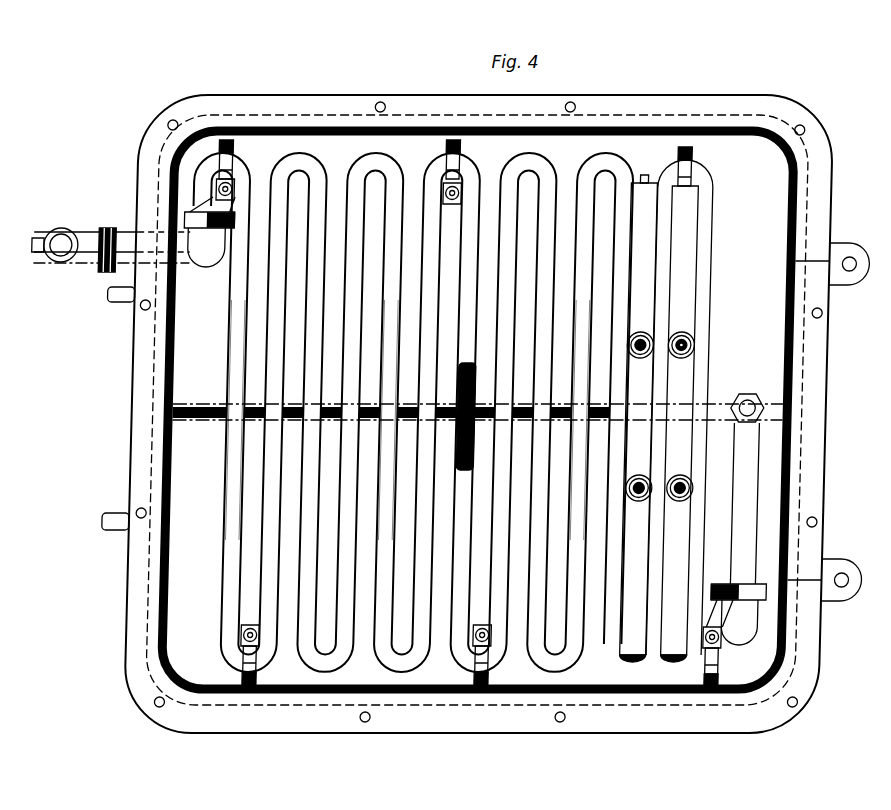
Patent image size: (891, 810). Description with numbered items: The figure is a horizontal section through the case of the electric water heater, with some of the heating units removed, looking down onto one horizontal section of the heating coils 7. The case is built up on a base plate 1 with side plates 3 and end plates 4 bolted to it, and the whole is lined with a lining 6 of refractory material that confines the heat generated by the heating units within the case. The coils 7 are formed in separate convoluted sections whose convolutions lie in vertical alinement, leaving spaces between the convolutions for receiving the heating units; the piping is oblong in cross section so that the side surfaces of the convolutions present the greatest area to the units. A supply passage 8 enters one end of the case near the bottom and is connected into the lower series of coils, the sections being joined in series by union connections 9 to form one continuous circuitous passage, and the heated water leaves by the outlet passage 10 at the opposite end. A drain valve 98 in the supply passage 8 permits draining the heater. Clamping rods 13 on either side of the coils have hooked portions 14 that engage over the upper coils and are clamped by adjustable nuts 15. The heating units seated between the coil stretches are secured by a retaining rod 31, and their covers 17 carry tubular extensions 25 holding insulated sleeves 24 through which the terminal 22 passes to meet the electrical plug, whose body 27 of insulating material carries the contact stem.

The base plate 1 is at (408, 412).
The side plates 3 is at (585, 131).
The end plates 4 is at (807, 348).
The lining 6 is at (750, 140).
The heating coils 7 is at (234, 548).
The supply passage 8 is at (98, 264).
The union connections 9 is at (475, 421).
The outlet passage 10 is at (750, 393).
The clamping rods 13 is at (221, 152).
The hooked portions 14 is at (227, 165).
The adjustable nuts 15 is at (229, 190).
The covers 17 is at (666, 411).
The terminal 22 is at (679, 432).
The insulated sleeves 24 is at (671, 358).
The tubular extensions 25 is at (680, 332).
The body of insulating material 27 is at (674, 480).
The retaining rod 31 is at (256, 420).
The drain valve 98 is at (62, 263).